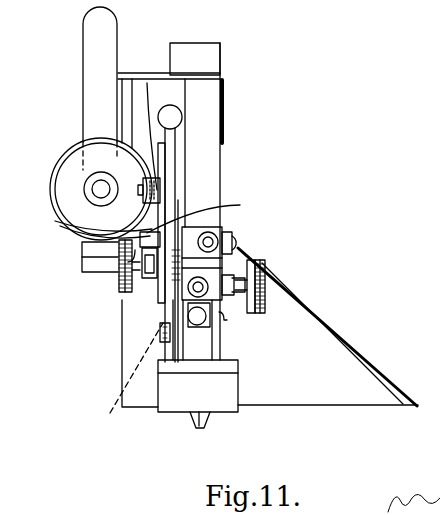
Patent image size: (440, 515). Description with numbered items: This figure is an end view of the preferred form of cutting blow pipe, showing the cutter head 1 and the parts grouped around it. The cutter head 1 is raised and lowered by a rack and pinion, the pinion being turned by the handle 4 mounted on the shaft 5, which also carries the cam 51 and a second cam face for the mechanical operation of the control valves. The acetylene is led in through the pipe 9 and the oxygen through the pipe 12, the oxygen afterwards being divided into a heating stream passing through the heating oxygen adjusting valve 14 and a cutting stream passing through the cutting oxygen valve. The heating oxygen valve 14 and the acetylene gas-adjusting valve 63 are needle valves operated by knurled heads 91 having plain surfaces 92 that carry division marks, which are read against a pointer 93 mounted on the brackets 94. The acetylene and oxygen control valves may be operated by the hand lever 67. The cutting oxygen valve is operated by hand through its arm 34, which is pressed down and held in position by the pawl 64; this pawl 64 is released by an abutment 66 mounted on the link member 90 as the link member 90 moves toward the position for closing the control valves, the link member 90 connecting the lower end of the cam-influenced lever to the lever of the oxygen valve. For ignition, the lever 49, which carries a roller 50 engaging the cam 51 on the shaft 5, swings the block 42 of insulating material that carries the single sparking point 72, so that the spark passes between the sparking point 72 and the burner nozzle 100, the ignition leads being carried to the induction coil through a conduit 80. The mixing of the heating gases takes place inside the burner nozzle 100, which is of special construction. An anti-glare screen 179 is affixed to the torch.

The cutter head 1 is at (198, 183).
The handle 4 is at (100, 66).
The shaft 5 is at (101, 188).
The pipe 9 is at (237, 233).
The pipe 12 is at (230, 313).
The heating oxygen adjusting valve 14 is at (118, 298).
The arm 34 is at (57, 222).
The swinging block 42 is at (172, 400).
The lever 49 is at (158, 170).
The roller 50 is at (150, 100).
The cam 51 is at (63, 168).
The acetylene gas-adjusting valve 63 is at (262, 282).
The pawl 64 is at (124, 300).
The abutment 66 is at (152, 318).
The hand lever 67 is at (165, 137).
The sparking point 72 is at (196, 420).
The conduit 80 is at (218, 342).
The link member 90 is at (130, 383).
The knurled heads 91 is at (112, 280).
The plain surfaces 92 is at (115, 258).
The pointer 93 is at (118, 242).
The brackets 94 is at (204, 238).
The burner nozzle 100 is at (208, 425).
The anti-glare screen 179 is at (308, 400).